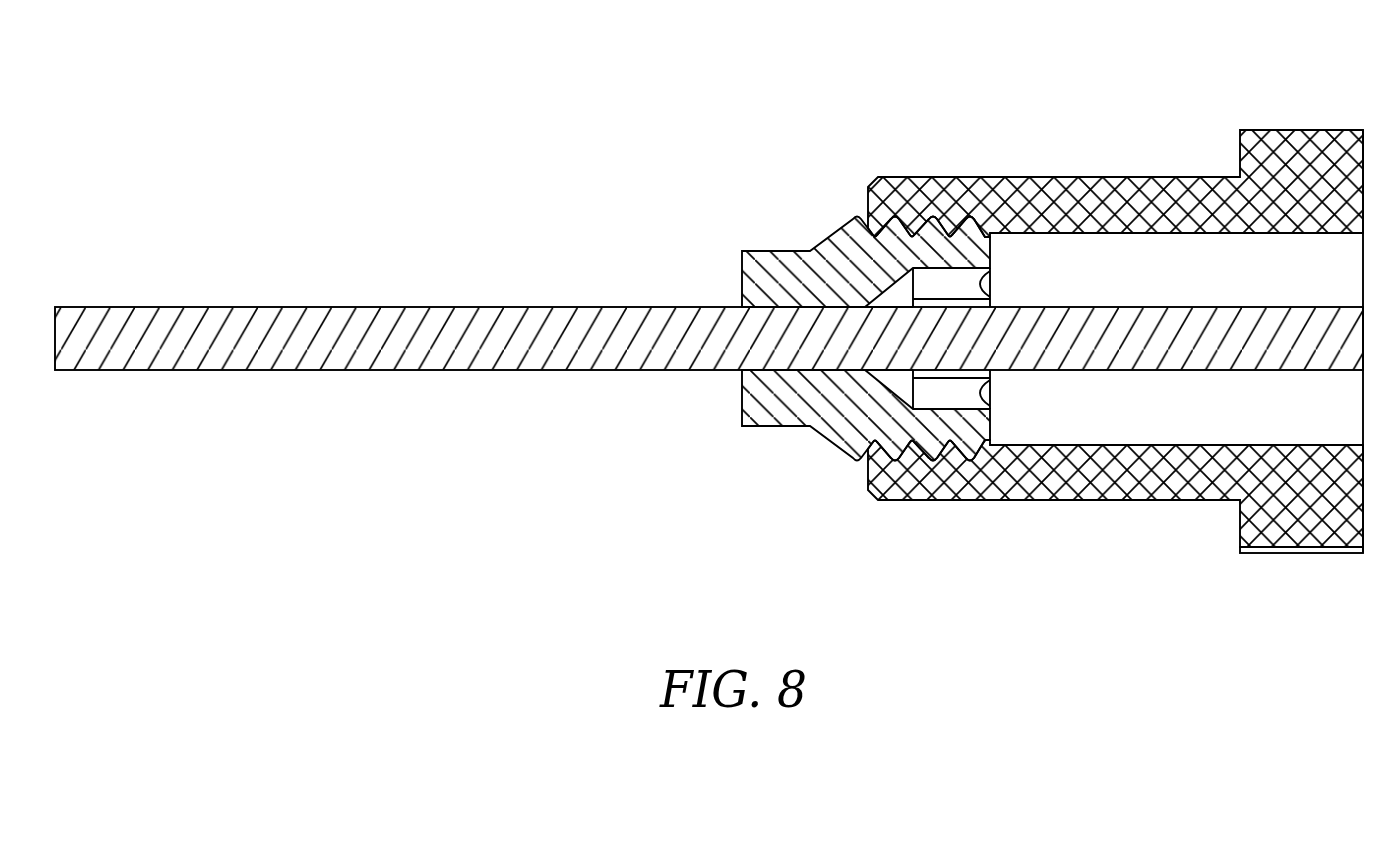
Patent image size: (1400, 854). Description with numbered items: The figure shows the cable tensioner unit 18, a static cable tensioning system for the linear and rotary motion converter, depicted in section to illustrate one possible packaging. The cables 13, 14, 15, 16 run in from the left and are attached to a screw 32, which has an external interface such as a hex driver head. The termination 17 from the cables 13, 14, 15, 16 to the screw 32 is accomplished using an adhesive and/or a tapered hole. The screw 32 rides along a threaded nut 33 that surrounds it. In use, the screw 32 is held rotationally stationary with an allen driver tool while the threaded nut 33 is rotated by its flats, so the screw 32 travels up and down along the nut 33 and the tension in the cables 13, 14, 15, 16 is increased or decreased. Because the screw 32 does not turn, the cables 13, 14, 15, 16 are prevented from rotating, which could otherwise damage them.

The cable 13 is at (709, 314).
The cable 14 is at (709, 314).
The cable 15 is at (709, 314).
The cable 16 is at (425, 342).
The termination 17 is at (778, 305).
The cable tensioner unit 18 is at (1335, 78).
The screw 32 is at (862, 283).
The threaded nut 33 is at (1153, 208).